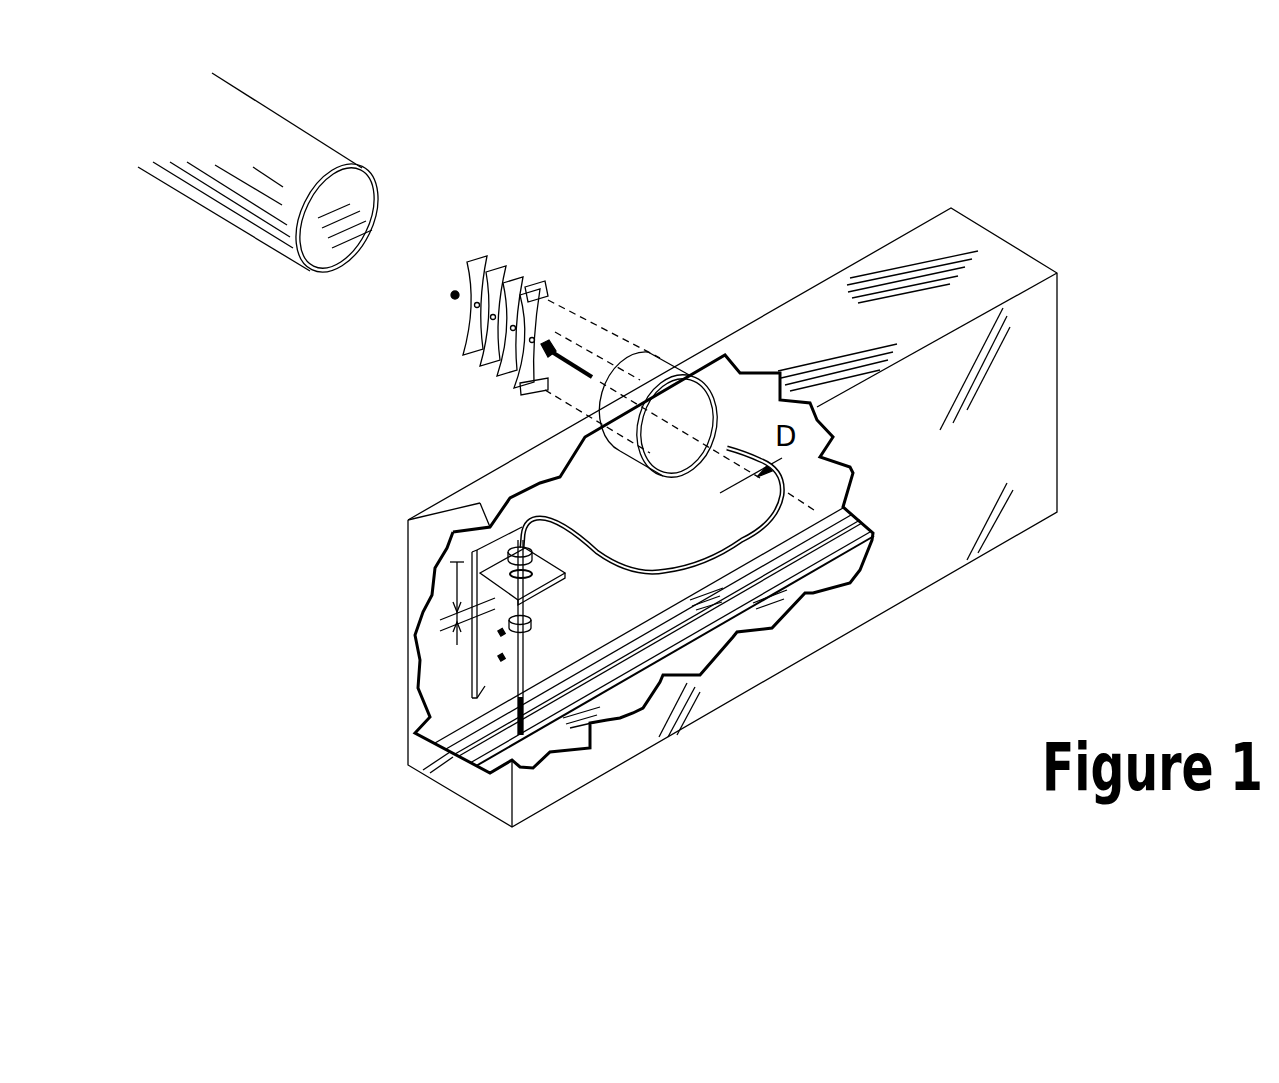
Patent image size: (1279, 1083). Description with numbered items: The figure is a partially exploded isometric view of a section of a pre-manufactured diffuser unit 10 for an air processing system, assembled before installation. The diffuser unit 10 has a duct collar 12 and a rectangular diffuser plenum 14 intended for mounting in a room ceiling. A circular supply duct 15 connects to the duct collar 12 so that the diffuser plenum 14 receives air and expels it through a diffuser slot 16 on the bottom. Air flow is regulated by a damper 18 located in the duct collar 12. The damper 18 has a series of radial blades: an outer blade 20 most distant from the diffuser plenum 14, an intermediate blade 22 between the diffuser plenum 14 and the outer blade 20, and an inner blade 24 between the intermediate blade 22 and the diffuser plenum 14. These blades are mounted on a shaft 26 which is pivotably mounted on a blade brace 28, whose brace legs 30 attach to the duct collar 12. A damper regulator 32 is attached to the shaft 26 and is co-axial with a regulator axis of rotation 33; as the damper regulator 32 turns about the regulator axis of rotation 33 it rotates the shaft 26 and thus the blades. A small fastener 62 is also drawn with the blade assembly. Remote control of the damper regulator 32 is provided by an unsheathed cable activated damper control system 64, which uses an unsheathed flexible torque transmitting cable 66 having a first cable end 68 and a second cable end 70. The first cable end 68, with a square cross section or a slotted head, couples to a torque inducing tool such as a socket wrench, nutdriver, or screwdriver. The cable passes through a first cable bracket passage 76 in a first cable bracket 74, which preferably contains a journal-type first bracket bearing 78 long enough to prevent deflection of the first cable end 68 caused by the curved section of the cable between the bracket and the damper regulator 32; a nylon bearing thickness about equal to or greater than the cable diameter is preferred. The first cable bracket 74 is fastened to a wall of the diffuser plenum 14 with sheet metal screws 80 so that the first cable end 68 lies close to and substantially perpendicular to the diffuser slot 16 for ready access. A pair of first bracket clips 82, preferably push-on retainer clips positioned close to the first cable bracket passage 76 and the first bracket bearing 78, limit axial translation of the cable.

The diffuser unit 10 is at (866, 851).
The duct collar 12 is at (680, 353).
The diffuser plenum 14 is at (1062, 362).
The supply duct 15 is at (352, 128).
The diffuser slot 16 is at (813, 560).
The damper 18 is at (453, 369).
The outer blade 20 is at (446, 248).
The intermediate blade 22 is at (517, 254).
The inner blade 24 is at (561, 264).
The shaft 26 is at (621, 294).
The blade brace 28 is at (483, 427).
The brace legs 30 is at (574, 267).
The damper regulator 32 is at (645, 323).
The regulator axis of rotation 33 is at (568, 367).
The fastener 62 is at (415, 271).
The unsheathed cable activated damper control system 64 is at (443, 608).
The unsheathed flexible torque transmitting cable 66 is at (667, 568).
The first cable end 68 is at (520, 727).
The second cable end 70 is at (565, 352).
The first cable bracket 74 is at (470, 690).
The first cable bracket passage 76 is at (457, 541).
The first bracket bearing 78 is at (545, 573).
The sheet metal screws 80 is at (497, 636).
The first bracket clips 82 is at (531, 550).